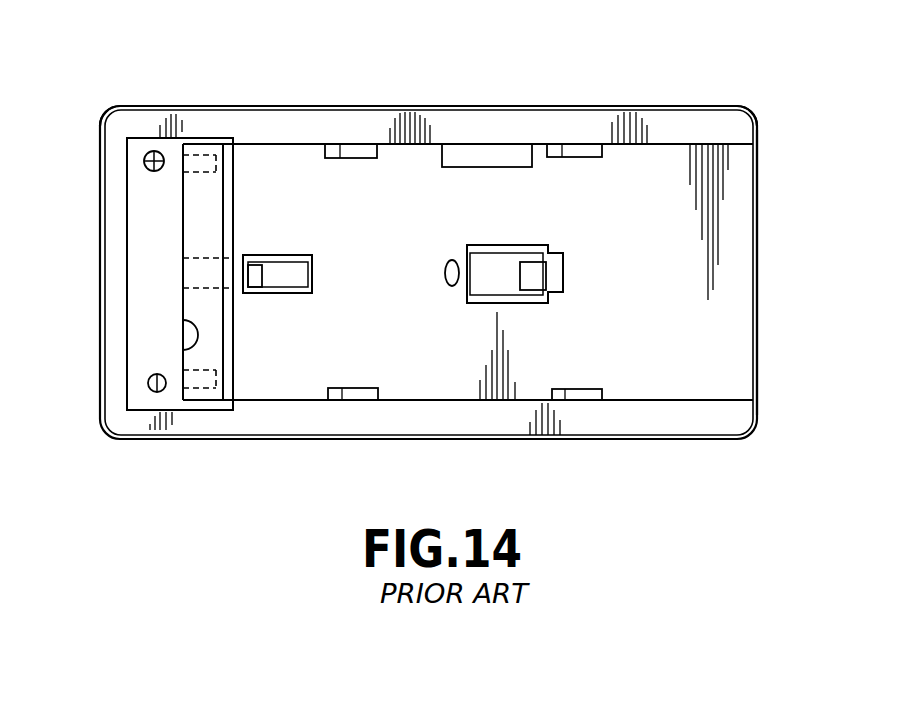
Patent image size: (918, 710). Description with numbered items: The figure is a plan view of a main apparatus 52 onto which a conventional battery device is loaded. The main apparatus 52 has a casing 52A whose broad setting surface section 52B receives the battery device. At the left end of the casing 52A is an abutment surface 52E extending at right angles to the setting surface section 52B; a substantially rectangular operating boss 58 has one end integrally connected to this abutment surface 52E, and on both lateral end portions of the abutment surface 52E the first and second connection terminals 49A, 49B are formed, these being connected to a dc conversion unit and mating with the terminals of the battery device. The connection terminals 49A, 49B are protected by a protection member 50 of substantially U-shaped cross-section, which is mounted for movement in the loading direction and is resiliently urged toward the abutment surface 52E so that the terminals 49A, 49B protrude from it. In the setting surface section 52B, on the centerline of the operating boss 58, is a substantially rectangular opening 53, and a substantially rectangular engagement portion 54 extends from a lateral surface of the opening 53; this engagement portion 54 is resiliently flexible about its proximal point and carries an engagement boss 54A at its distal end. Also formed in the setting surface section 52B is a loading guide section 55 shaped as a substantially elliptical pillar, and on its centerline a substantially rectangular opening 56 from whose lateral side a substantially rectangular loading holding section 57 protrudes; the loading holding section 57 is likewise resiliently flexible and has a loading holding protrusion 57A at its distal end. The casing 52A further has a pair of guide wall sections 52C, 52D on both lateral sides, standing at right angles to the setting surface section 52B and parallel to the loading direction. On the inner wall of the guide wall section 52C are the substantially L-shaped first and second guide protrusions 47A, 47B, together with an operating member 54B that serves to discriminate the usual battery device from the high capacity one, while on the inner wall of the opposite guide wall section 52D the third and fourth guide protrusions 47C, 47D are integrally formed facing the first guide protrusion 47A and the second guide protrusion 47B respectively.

The main apparatus 52 is at (693, 90).
The casing 52A is at (113, 119).
The setting surface section 52B is at (727, 353).
The guide wall section 52C is at (735, 128).
The guide wall section 52D is at (728, 423).
The abutment surface 52E is at (187, 348).
The opening 53 is at (451, 273).
The protection member 50 is at (234, 200).
The first connection terminal 49A is at (214, 155).
The second connection terminal 49B is at (207, 382).
The operating boss 58 is at (200, 261).
The first guide protrusion 47A is at (367, 158).
The second guide protrusion 47B is at (587, 157).
The third guide protrusion 47C is at (368, 388).
The fourth guide protrusion 47D is at (580, 393).
The engagement portion 54 is at (292, 277).
The engagement boss 54A is at (258, 278).
The operating member 54B is at (497, 153).
The loading guide section 55 is at (452, 262).
The opening 56 is at (532, 247).
The loading holding section 57 is at (493, 260).
The loading holding protrusion 57A is at (546, 274).